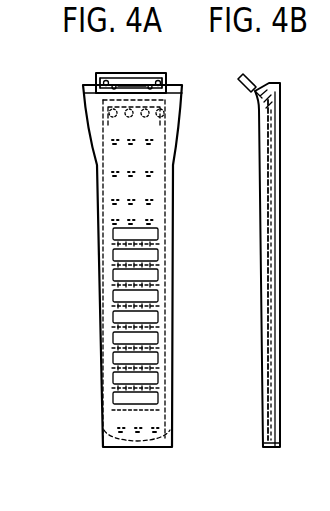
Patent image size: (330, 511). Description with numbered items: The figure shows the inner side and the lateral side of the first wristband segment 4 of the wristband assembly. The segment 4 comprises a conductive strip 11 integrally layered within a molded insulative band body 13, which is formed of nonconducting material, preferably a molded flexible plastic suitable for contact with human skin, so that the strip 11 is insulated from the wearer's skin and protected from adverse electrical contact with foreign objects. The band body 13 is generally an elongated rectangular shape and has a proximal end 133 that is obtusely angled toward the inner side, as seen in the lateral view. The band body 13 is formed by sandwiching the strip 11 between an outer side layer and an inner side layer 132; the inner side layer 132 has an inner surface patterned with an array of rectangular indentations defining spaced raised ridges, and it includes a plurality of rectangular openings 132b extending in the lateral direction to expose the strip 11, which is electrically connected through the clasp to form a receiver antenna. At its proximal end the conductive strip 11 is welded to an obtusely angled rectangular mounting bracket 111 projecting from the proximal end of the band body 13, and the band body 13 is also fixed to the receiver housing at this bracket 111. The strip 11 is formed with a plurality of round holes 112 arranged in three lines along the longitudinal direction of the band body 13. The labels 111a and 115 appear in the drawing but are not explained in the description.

In FIG. 4A, the first wristband segment 4 is at (93, 333).
In FIG. 4A, the band body 13 is at (98, 204).
In FIG. 4B, the band body 13 is at (281, 220).
In FIG. 4A, the mounting bracket 111 is at (98, 75).
In FIG. 4A, the round holes 112 is at (183, 172).
In FIG. 4B, the round holes 112 is at (299, 270).
In FIG. 4A, the rectangular openings 132b is at (98, 275).
In FIG. 4B, the conductive strip 11 is at (287, 172).
In FIG. 4B, the proximal end 133 is at (273, 84).
In FIG. 4B, the end piece shoulder 111a is at (292, 115).
In FIG. 4B, the inner side layer 132 is at (262, 260).
In FIG. 4B, the band end 115 is at (297, 446).